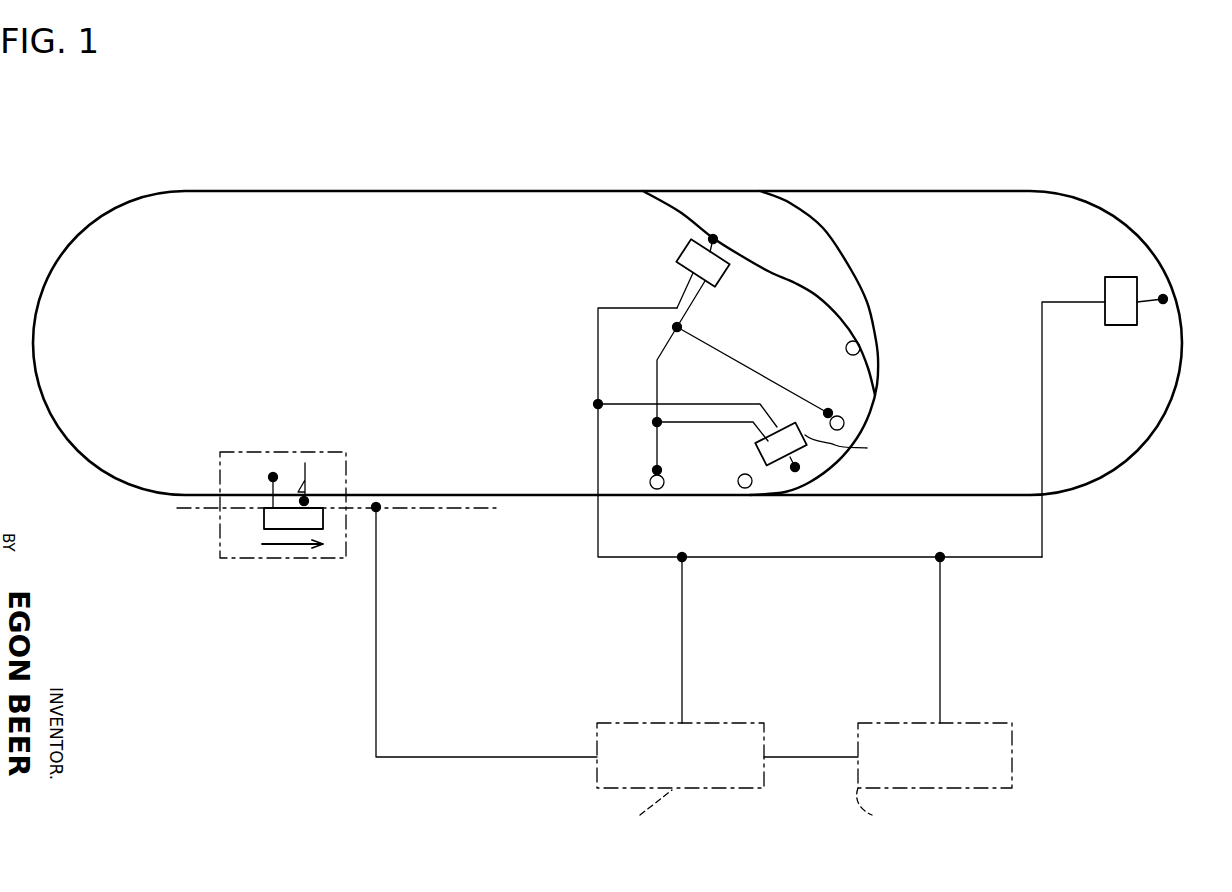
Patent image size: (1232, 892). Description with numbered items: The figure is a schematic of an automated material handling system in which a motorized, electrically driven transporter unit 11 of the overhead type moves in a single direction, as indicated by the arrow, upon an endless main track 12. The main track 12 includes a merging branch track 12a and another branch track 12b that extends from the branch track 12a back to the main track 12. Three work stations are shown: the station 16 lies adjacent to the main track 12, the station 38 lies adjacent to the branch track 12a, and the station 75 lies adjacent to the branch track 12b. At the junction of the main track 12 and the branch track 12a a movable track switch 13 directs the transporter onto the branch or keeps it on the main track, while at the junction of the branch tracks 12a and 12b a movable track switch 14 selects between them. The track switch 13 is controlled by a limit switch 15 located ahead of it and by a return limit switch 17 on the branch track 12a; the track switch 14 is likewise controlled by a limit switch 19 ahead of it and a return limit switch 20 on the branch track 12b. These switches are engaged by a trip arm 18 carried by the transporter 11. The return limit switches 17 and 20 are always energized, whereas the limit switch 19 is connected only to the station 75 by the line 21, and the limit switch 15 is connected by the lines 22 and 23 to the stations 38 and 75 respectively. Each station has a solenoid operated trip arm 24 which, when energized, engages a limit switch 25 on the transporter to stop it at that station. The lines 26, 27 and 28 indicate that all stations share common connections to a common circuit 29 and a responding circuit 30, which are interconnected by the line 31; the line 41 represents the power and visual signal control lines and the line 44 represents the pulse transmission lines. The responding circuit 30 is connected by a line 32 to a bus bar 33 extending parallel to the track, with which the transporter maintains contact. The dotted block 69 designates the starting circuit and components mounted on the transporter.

The main track 12 is at (474, 188).
The merging branch track 12a is at (868, 287).
The branch track 12b is at (810, 288).
The work station 75 is at (690, 256).
The solenoid operated trip arm 24 is at (718, 238).
The common connection line 28 is at (597, 368).
The connection line 23 is at (657, 387).
The connection line 21 is at (747, 362).
The common connection line 27 is at (703, 403).
The connection line 22 is at (721, 425).
The return limit switch 20 is at (847, 348).
The movable track switch 14 is at (867, 393).
The limit switch 19 is at (856, 423).
The work station 38 is at (855, 449).
The limit switch 15 is at (651, 482).
The return limit switch 17 is at (738, 481).
The movable track switch 13 is at (738, 496).
The trip arm 18 is at (266, 484).
The transporter limit switch 25 is at (308, 483).
The starting circuit 69 is at (218, 528).
The transporter unit 11 is at (270, 517).
The bus bar 33 is at (418, 509).
The connection line 32 is at (377, 648).
The pulse transmission lines 44 is at (683, 660).
The control lines 41 is at (941, 633).
The responding circuit 30 is at (620, 722).
The common circuit 29 is at (993, 722).
The interconnecting line 31 is at (800, 757).
The work station 16 is at (1110, 287).
The common connection line 26 is at (1042, 387).